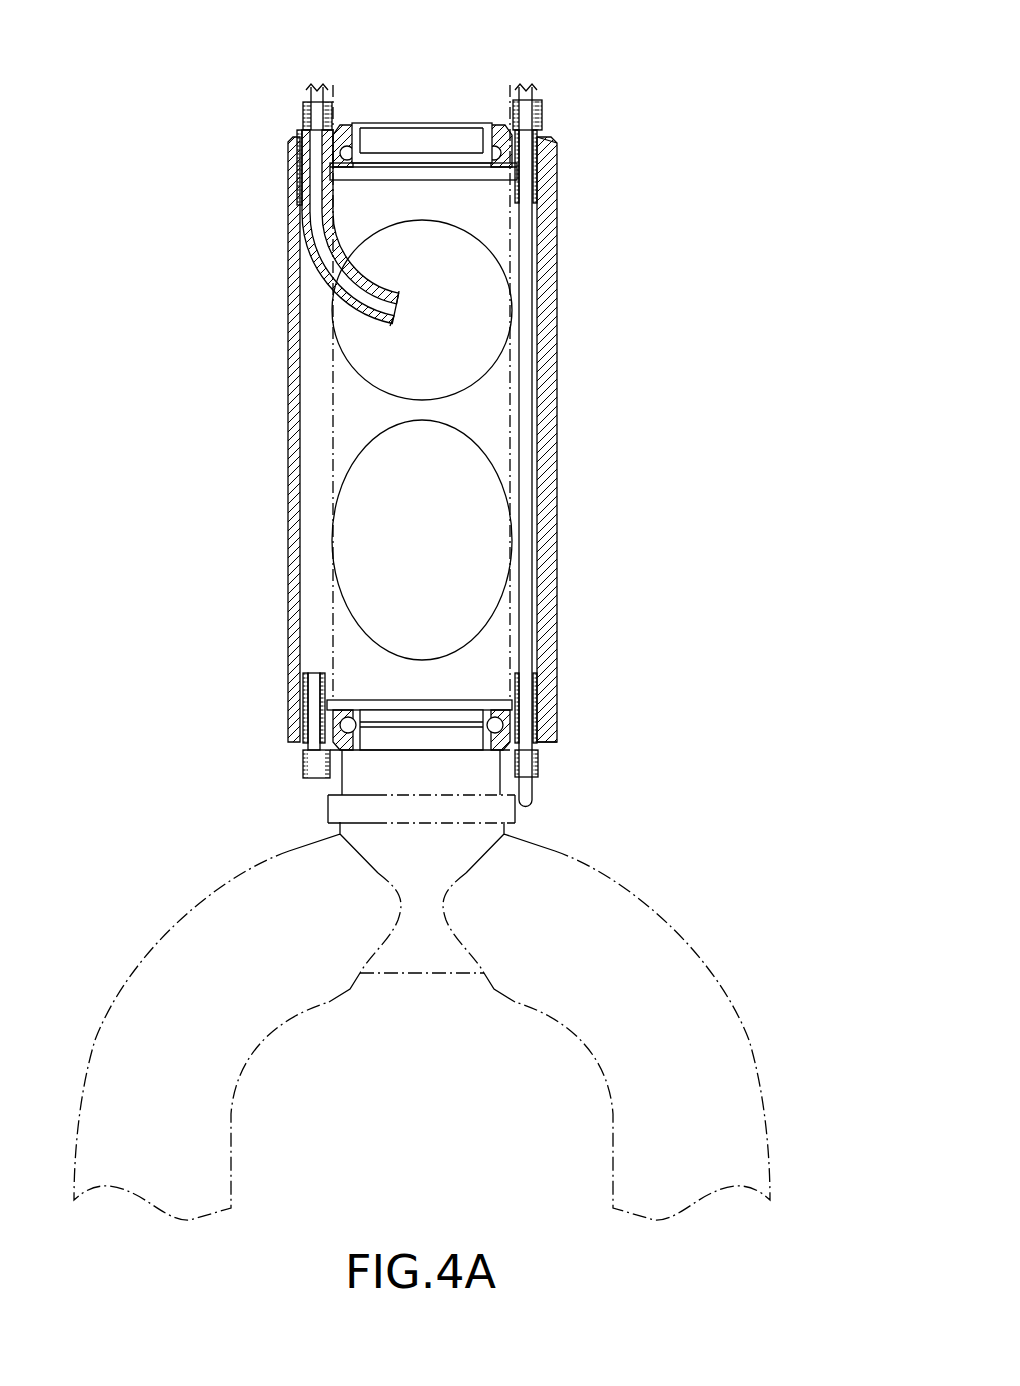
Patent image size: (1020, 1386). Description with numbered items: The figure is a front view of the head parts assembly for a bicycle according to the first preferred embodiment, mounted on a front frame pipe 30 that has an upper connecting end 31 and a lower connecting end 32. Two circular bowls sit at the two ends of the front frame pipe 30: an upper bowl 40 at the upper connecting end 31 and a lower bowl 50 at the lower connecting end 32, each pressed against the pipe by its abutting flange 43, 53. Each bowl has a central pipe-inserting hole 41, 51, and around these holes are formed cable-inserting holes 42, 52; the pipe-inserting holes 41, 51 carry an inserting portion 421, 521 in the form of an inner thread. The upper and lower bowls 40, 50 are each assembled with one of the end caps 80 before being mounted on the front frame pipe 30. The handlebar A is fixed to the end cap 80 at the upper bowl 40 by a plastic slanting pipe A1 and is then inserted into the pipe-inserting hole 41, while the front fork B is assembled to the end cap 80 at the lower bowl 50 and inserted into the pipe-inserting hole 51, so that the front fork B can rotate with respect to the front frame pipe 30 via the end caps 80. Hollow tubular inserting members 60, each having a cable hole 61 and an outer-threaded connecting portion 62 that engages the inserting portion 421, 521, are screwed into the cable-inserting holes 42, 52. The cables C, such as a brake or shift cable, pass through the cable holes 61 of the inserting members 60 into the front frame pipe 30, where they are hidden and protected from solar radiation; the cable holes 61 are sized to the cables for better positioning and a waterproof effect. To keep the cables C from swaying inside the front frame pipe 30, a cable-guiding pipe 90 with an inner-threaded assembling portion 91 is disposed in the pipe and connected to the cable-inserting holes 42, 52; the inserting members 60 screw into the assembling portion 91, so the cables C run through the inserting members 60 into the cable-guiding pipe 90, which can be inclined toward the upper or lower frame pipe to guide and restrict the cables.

The front frame pipe 30 is at (562, 336).
The upper connecting end 31 is at (558, 153).
The lower connecting end 32 is at (545, 748).
The upper bowl 40 is at (406, 139).
The pipe-inserting hole 41 is at (452, 172).
The cable-inserting hole 42 is at (545, 172).
The abutting flange 43 is at (297, 137).
The inserting portion 421 is at (300, 150).
The lower bowl 50 is at (411, 743).
The pipe-inserting hole 51 is at (402, 704).
The cable-inserting hole 52 is at (545, 716).
The abutting flange 53 is at (296, 752).
The inserting portion 521 is at (526, 725).
The inserting member 60 is at (547, 103).
The cable hole 61 is at (538, 196).
The connecting portion 62 is at (301, 205).
The end cap 80 is at (496, 126).
The cable-guiding pipe 90 is at (388, 322).
The assembling portion 91 is at (352, 194).
The handlebar A is at (472, 88).
The plastic slanting pipe A1 is at (362, 122).
The front fork B is at (473, 775).
The cable C is at (304, 246).